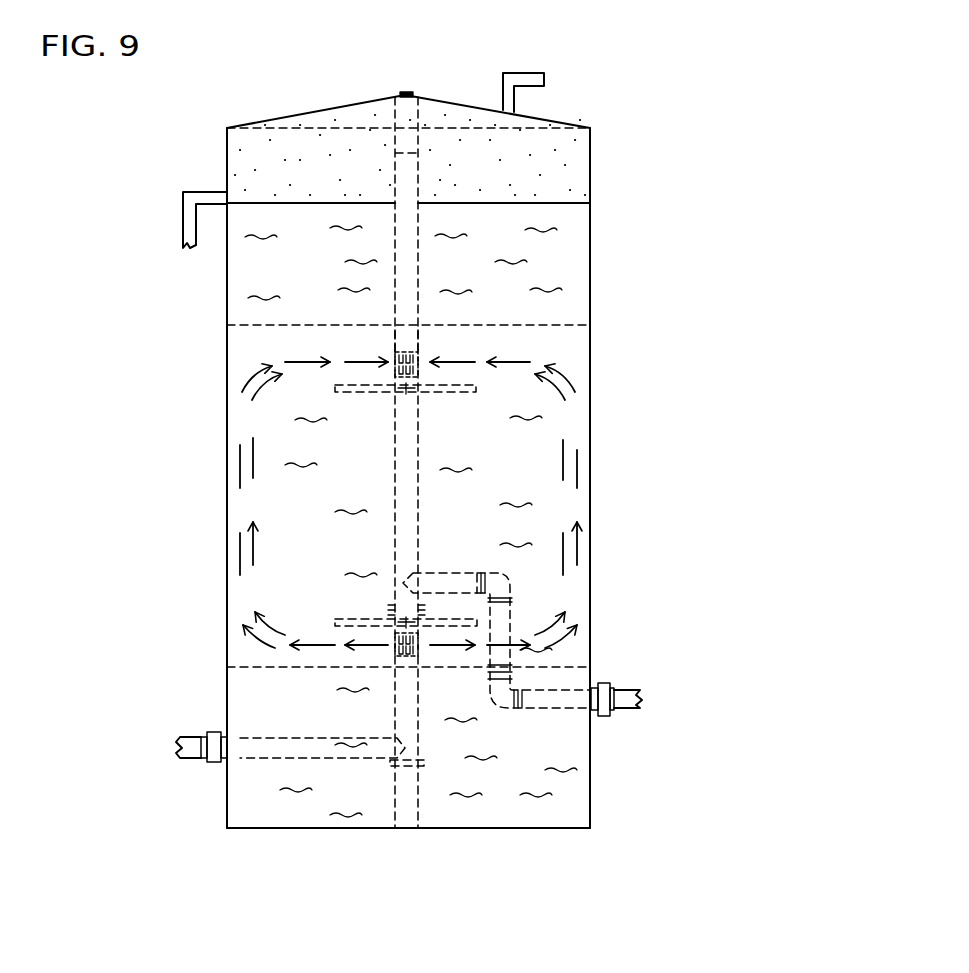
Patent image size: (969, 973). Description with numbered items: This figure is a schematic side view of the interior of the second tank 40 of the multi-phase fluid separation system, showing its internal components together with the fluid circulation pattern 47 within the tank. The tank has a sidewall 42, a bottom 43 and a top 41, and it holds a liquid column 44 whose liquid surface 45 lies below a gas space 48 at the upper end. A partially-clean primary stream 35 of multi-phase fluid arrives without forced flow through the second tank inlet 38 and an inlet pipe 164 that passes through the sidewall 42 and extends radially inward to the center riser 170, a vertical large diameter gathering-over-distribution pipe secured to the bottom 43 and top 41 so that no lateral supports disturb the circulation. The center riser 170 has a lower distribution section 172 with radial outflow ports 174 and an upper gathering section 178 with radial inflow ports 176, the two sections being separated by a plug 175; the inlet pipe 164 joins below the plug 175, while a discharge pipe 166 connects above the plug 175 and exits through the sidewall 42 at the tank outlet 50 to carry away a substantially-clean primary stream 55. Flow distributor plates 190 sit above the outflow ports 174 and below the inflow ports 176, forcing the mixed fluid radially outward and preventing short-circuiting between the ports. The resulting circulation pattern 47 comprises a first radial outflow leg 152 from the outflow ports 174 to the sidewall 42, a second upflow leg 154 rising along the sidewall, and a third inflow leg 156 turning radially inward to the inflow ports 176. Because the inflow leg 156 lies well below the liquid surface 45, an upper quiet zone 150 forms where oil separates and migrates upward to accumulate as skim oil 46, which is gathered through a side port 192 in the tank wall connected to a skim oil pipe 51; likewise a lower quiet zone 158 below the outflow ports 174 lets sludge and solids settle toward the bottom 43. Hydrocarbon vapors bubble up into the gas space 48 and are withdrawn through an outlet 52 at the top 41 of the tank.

The second tank 40 is at (625, 88).
The top 41 is at (367, 100).
The sidewall 42 is at (590, 528).
The bottom 43 is at (287, 832).
The liquid column 44 is at (472, 518).
The liquid surface 45 is at (560, 203).
The skim oil 46 is at (343, 200).
The fluid circulation pattern 47 is at (243, 470).
The gas space 48 is at (498, 179).
The outlet flange 50 is at (597, 685).
The skim oil pipe 51 is at (183, 216).
The outlet 52 is at (515, 72).
The substantially-clean primary stream 55 is at (693, 700).
The partially-clean primary stream 35 is at (168, 747).
The second tank inlet 38 is at (220, 767).
The upper quiet zone 150 is at (567, 262).
The first radial outflow leg 152 is at (270, 612).
The second upflow leg 154 is at (575, 476).
The third inflow leg 156 is at (515, 352).
The lower quiet zone 158 is at (500, 775).
The inlet pipe 164 is at (323, 752).
The discharge pipe 166 is at (552, 708).
The center riser 170 is at (390, 543).
The distribution section 172 is at (398, 712).
The radial outflow ports 174 is at (410, 657).
The plug 175 is at (395, 610).
The radial inflow ports 176 is at (396, 368).
The gathering section 178 is at (395, 487).
The flow distributor plates 190 is at (465, 395).
The side port 192 is at (230, 197).